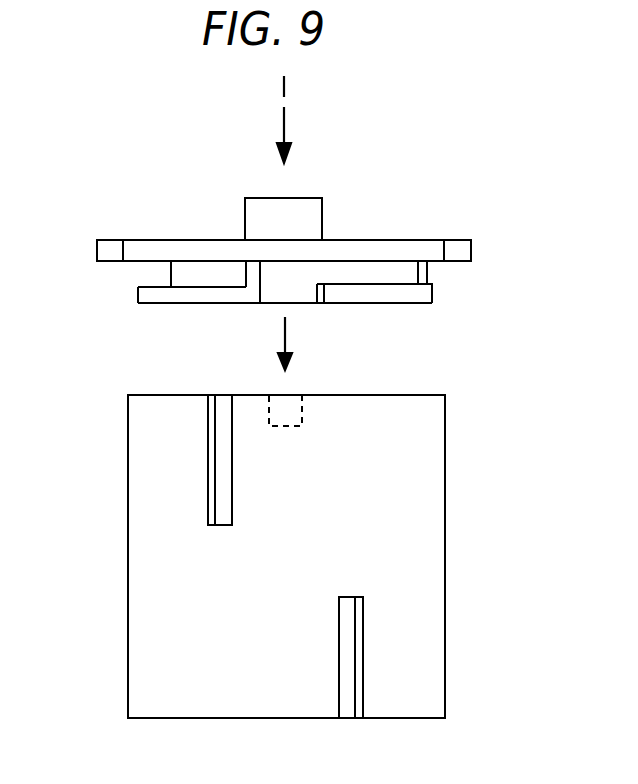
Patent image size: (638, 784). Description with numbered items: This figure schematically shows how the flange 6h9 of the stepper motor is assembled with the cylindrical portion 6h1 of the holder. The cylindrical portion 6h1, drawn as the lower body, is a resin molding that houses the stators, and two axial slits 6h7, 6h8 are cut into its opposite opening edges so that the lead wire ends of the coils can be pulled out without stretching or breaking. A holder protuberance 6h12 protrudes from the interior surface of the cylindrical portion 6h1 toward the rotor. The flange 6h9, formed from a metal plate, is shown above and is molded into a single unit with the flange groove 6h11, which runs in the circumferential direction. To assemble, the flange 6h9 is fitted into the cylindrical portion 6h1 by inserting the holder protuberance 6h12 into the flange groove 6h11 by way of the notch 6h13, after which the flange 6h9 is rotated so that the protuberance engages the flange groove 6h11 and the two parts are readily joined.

The cylindrical portion 6h1 is at (417, 431).
The slit 6h7 is at (364, 651).
The slit 6h8 is at (206, 458).
The flange 6h9 is at (457, 243).
The flange groove 6h11 is at (397, 270).
The holder protuberance 6h12 is at (285, 408).
The notch 6h13 is at (284, 292).